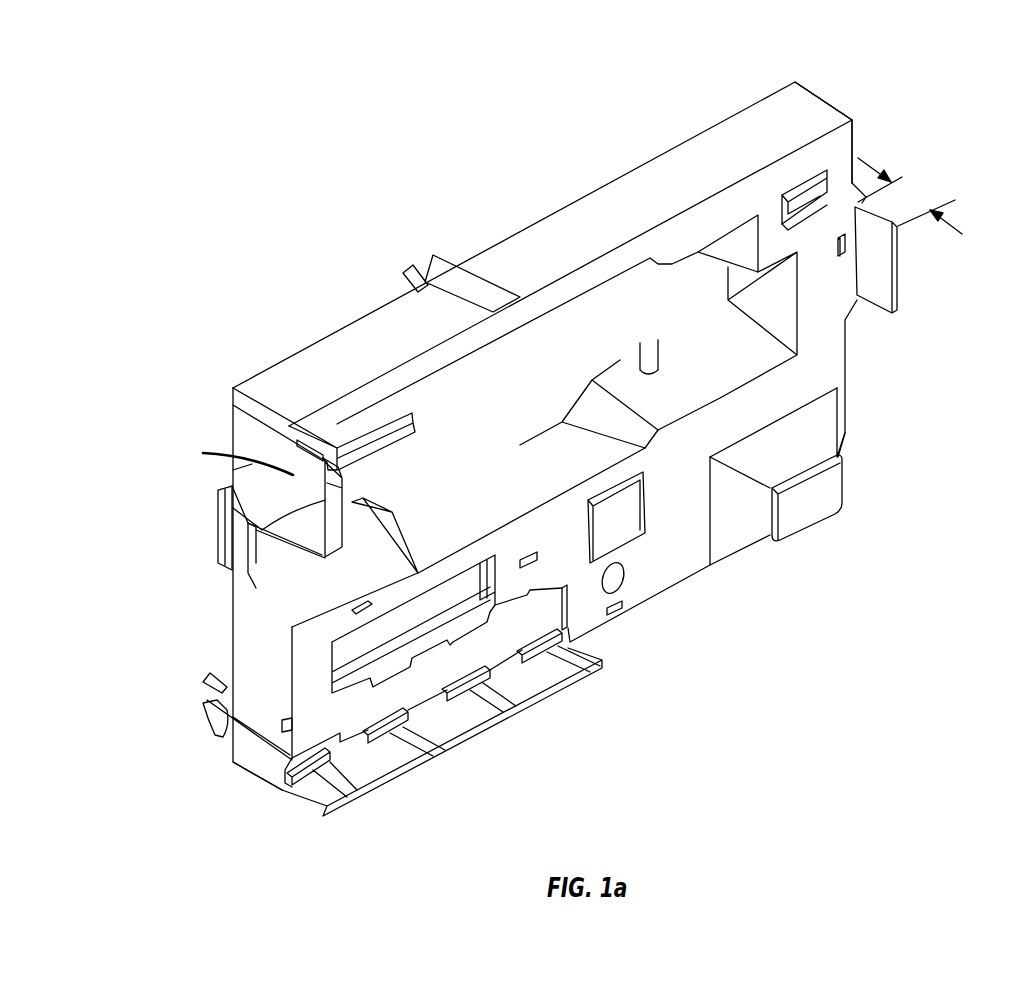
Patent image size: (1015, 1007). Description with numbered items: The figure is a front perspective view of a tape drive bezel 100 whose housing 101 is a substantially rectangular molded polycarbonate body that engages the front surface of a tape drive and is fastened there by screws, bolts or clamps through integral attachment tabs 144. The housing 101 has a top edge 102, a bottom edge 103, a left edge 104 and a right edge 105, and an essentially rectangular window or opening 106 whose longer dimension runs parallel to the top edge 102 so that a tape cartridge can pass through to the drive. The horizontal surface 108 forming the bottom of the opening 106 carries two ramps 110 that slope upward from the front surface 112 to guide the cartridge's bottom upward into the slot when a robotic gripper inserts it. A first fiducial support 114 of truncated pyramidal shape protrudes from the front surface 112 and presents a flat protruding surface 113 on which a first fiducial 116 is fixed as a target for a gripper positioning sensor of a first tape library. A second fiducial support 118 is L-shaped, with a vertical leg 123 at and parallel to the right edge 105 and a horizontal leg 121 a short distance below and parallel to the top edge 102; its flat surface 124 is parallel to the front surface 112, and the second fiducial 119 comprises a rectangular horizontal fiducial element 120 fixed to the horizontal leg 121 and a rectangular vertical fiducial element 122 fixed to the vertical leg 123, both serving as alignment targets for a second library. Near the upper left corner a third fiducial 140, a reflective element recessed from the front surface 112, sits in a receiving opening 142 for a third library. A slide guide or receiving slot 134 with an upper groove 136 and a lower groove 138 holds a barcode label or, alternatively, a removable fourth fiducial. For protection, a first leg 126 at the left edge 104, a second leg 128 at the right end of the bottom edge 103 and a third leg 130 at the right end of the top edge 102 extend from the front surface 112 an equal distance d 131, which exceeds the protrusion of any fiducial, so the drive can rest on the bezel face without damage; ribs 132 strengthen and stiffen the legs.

The tape drive bezel 100 is at (755, 713).
The housing 101 is at (818, 94).
The top edge 102 is at (783, 95).
The bottom edge 103 is at (240, 770).
The left edge 104 is at (853, 151).
The right edge 105 is at (240, 640).
The window or opening 106 is at (780, 318).
The horizontal surface 108 is at (497, 473).
The ramps 110 is at (692, 337).
The front surface 112 is at (680, 565).
The flat protruding surface 113 is at (770, 487).
The first fiducial support 114 is at (823, 424).
The first fiducial 116 is at (827, 487).
The second fiducial support 118 is at (250, 465).
The second fiducial 119 is at (338, 446).
The horizontal fiducial element 120 is at (378, 442).
The horizontal leg 121 is at (416, 426).
The vertical fiducial element 122 is at (252, 522).
The vertical leg 123 is at (216, 463).
The flat surface 124 is at (258, 452).
The first leg 126 is at (903, 284).
The second leg 128 is at (313, 815).
The third leg 130 is at (293, 392).
The distance d 131 is at (930, 184).
The ribs 132 is at (557, 653).
The slide guide or receiving slot 134 is at (553, 610).
The upper groove 136 is at (283, 727).
The lower groove 138 is at (290, 785).
The third fiducial 140 is at (805, 185).
The receiving opening 142 is at (800, 200).
The attachment tabs 144 is at (452, 258).